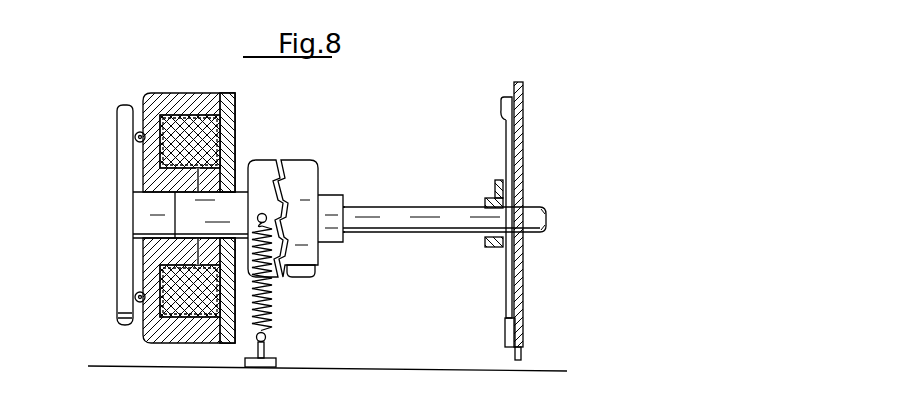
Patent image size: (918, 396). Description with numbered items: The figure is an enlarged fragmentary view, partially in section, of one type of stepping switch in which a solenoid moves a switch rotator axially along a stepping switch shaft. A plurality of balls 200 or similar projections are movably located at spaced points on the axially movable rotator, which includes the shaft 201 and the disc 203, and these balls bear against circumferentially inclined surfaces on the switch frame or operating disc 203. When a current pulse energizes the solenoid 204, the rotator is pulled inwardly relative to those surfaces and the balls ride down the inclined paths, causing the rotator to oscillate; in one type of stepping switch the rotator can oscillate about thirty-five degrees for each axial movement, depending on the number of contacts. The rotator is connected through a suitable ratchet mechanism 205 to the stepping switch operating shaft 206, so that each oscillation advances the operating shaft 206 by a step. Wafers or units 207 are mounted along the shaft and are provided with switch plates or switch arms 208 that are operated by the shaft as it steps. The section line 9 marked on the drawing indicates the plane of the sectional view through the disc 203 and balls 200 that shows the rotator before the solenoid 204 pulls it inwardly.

The section line 9- 9 is at (175, 203).
The balls 200 is at (135, 138).
The shaft 201 is at (233, 208).
The disc 203 is at (118, 253).
The solenoid 204 is at (237, 112).
The ratchet mechanism 205 is at (277, 153).
The stepping switch operating shaft 206 is at (423, 212).
The wafer 207 is at (525, 66).
The switch arm 208 is at (504, 135).